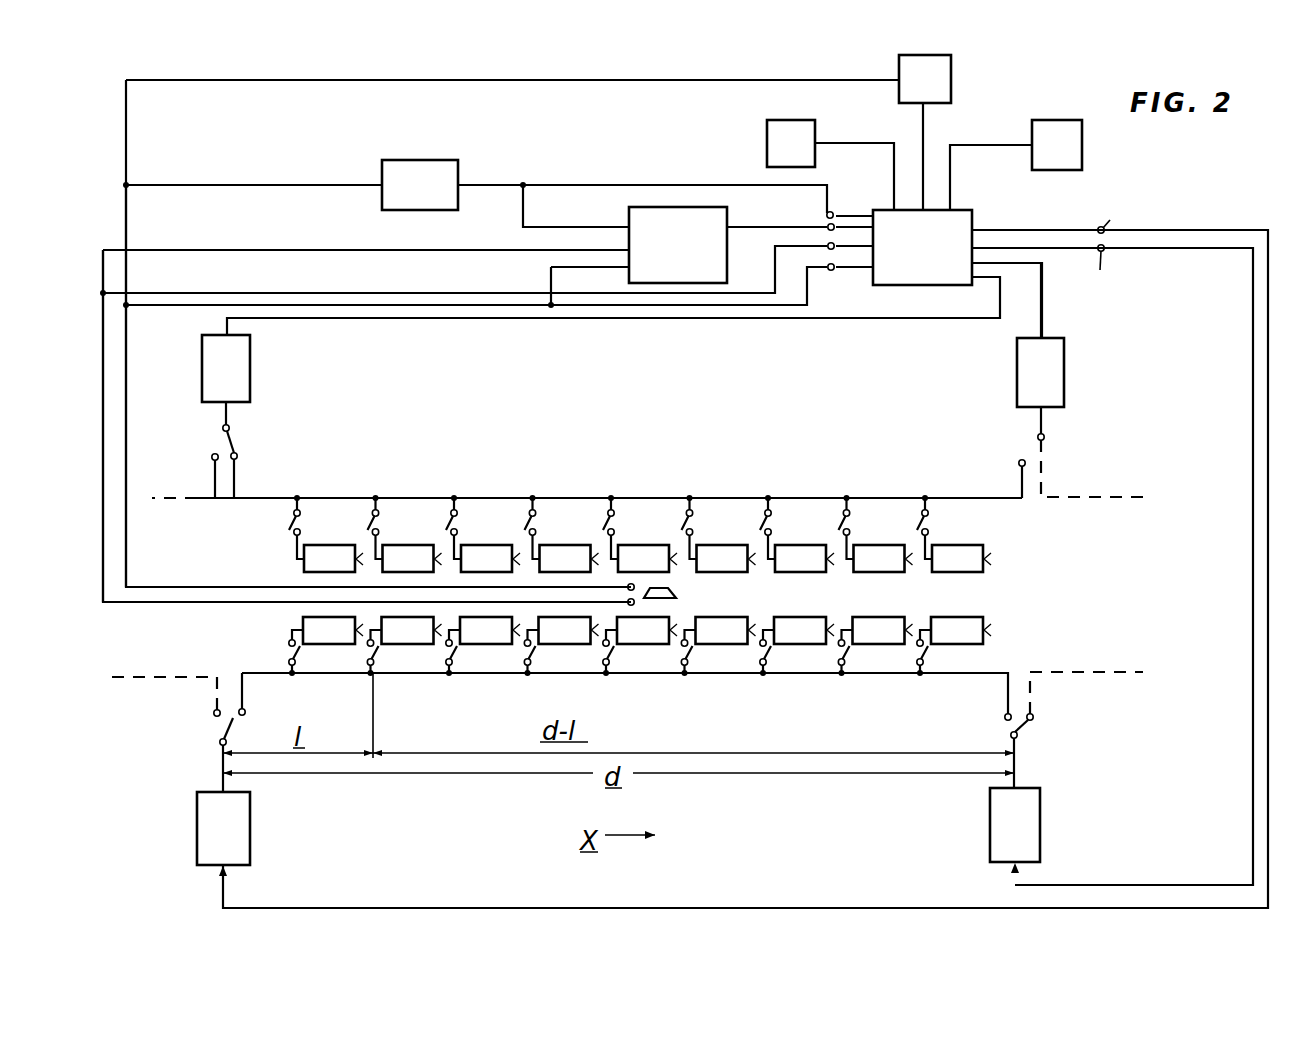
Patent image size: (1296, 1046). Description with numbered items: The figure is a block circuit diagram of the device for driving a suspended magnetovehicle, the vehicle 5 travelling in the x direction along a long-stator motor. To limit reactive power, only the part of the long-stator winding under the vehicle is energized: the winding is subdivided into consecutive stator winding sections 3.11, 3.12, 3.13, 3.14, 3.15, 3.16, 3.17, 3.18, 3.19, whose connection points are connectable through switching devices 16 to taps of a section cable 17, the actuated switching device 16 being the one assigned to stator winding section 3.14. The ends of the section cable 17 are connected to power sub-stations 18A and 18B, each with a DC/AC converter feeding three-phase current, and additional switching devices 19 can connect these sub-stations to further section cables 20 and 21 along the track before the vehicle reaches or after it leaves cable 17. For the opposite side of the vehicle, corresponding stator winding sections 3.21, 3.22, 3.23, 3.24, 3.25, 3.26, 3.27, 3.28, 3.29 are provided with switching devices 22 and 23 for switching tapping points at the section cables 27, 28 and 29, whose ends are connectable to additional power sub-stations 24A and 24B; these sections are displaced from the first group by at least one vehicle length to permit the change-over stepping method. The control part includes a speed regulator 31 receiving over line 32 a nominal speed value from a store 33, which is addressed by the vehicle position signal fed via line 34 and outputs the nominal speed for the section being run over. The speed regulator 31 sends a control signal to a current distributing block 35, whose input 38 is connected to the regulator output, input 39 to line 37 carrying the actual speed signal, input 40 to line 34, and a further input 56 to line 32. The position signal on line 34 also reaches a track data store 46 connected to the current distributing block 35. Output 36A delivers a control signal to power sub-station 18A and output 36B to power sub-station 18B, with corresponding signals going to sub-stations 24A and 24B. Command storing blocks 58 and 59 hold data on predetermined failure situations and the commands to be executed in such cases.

The track data store 46 is at (951, 80).
The command storing block 59 is at (777, 124).
The command storing block 58 is at (1082, 145).
The store 33 is at (430, 166).
The line 32 is at (493, 184).
The speed regulator 31 is at (650, 218).
The current distributing block 35 is at (957, 222).
The input 56 is at (833, 212).
The input 38 is at (826, 226).
The input 39 is at (826, 249).
The input 40 is at (832, 271).
The output 36A is at (1105, 209).
The output 36B is at (1123, 277).
The line 37 is at (103, 418).
The line 34 is at (127, 380).
The power sub-station 24A is at (243, 368).
The power sub-station 24B is at (1055, 367).
The switching device 23 is at (233, 440).
The section cable 27 is at (183, 496).
The section cable 28 is at (495, 472).
The switching device 22 is at (288, 520).
The section cable 29 is at (1145, 500).
The vehicle 5 is at (676, 592).
The switching device 16 is at (290, 651).
The section cable 17 is at (882, 674).
The section cable 21 is at (1102, 672).
The section cable 20 is at (147, 675).
The switching device 19 is at (227, 723).
The power sub-station 18A is at (208, 817).
The power sub-station 18B is at (1025, 810).
The stator winding section 3.11 is at (333, 630).
The stator winding section 3.12 is at (412, 630).
The stator winding section 3.13 is at (490, 630).
The stator winding section 3.14 is at (569, 630).
The stator winding section 3.15 is at (647, 630).
The stator winding section 3.16 is at (726, 630).
The stator winding section 3.17 is at (804, 630).
The stator winding section 3.18 is at (883, 630).
The stator winding section 3.19 is at (961, 630).
The stator winding section 3.21 is at (333, 558).
The stator winding section 3.22 is at (412, 558).
The stator winding section 3.23 is at (490, 558).
The stator winding section 3.24 is at (569, 558).
The stator winding section 3.25 is at (647, 558).
The stator winding section 3.26 is at (726, 558).
The stator winding section 3.27 is at (804, 558).
The stator winding section 3.28 is at (883, 558).
The stator winding section 3.29 is at (961, 558).